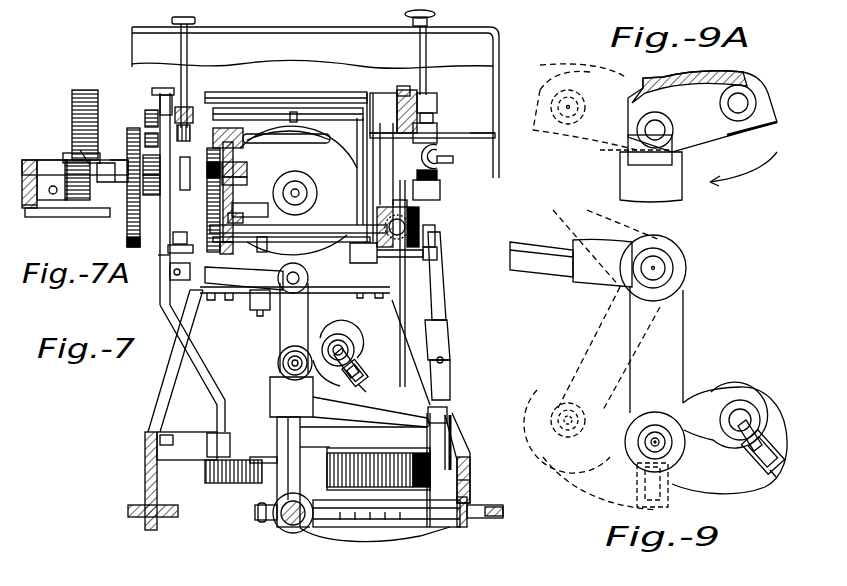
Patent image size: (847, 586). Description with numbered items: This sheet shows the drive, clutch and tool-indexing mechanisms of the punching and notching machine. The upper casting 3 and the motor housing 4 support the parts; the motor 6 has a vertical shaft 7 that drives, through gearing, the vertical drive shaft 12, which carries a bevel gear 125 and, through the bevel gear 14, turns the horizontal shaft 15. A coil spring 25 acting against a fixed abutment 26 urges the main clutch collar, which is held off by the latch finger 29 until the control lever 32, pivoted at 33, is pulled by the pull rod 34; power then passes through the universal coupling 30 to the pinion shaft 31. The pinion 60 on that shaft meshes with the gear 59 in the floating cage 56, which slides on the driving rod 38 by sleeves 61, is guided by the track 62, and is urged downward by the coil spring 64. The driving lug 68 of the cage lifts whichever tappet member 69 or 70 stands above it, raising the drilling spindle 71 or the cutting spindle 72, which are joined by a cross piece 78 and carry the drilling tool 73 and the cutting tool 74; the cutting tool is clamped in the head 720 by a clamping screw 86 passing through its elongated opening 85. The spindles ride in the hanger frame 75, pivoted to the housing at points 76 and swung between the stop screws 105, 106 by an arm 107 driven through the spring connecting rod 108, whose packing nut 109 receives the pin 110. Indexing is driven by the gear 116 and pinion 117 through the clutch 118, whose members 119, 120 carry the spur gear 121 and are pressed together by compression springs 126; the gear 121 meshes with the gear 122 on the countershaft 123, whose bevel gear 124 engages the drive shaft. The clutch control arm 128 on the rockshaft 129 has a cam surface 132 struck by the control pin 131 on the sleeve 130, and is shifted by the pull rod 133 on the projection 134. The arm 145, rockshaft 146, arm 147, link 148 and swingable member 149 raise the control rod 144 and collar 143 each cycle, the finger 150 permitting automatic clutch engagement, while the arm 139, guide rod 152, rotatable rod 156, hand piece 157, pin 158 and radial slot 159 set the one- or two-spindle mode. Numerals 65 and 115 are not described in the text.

In FIG. 7, the upper casting 3 is at (499, 55).
In FIG. 7, the motor housing 4 is at (380, 93).
In FIG. 7, the motor 6 is at (335, 170).
In FIG. 7, the motor shaft 7 is at (297, 190).
In FIG. 7, the drive shaft 12 is at (410, 228).
In FIG. 7, the bevel gear 14 is at (407, 210).
In FIG. 7, the horizontal shaft 15 is at (437, 130).
In FIG. 7, the coil spring 25 is at (437, 175).
In FIG. 7, the fixed abutment 26 is at (440, 190).
In FIG. 7, the latch finger 29 is at (437, 253).
In FIG. 7, the universal coupling 30 is at (445, 290).
In FIG. 7, the pinion shaft 31 is at (452, 403).
In FIG. 7, the control lever 32 is at (330, 108).
In FIG. 7, the lever pivot 33 is at (357, 182).
In FIG. 7, the pull rod 34 is at (293, 112).
In FIG. 7, the driving rod 38 is at (283, 527).
In FIG. 7, the floating cage 56 is at (307, 442).
In FIG. 7, the gear 59 is at (230, 484).
In FIG. 7, the pinion 60 is at (465, 457).
In FIG. 7, the sleeve 61 is at (295, 533).
In FIG. 7, the track 62 is at (470, 527).
In FIG. 7, the coil spring 64 is at (258, 516).
In FIG. 7, the body 65 is at (376, 540).
In FIG. 7, the driving lug 68 is at (270, 390).
In FIG. 7, the tappet member 69 is at (278, 366).
In FIG. 9A, the tappet member 69 is at (635, 147).
In FIG. 9A, the tappet member 70 is at (770, 127).
In FIG. 9A, the drilling spindle 71 is at (675, 145).
In FIG. 9A, the cutting spindle 72 is at (757, 100).
In FIG. 7, the drilling tool 73 is at (332, 340).
In FIG. 9, the drilling tool 73 is at (647, 447).
In FIG. 7, the cutting tool 74 is at (355, 363).
In FIG. 9, the cutting tool 74 is at (747, 470).
In FIG. 7, the hanger frame 75 is at (309, 310).
In FIG. 9A, the hanger frame 75 is at (672, 82).
In FIG. 9, the hanger frame 75 is at (684, 343).
In FIG. 7, the pivot points 76 is at (300, 276).
In FIG. 9, the pivot points 76 is at (665, 266).
In FIG. 7, the cross piece 78 is at (322, 395).
In FIG. 9A, the cross piece 78 is at (713, 133).
In FIG. 9, the cross piece 78 is at (710, 483).
In FIG. 7, the elongated opening 85 is at (368, 368).
In FIG. 9, the clamping screw 86 is at (781, 444).
In FIG. 7, the adjustable stop screw 105 is at (267, 247).
In FIG. 7, the adjustable stop screw 106 is at (258, 312).
In FIG. 7, the arm 107 is at (185, 281).
In FIG. 9, the arm 107 is at (550, 262).
In FIG. 7, the spring connecting rod 108 is at (168, 250).
In FIG. 7, the packing nut 109 is at (192, 238).
In FIG. 7, the pin 110 is at (186, 253).
In FIG. 7, the arc 115 is at (268, 143).
In FIG. 7A, the gear 116 is at (86, 94).
In FIG. 7, the gear 116 is at (200, 125).
In FIG. 7A, the pinion 117 is at (72, 160).
In FIG. 7, the pinion 117 is at (186, 192).
In FIG. 7A, the clutch 118 is at (166, 148).
In FIG. 7A, the driving clutch member 119 is at (112, 185).
In FIG. 7, the driving clutch member 119 is at (242, 200).
In FIG. 7A, the driven clutch member 120 is at (80, 150).
In FIG. 7A, the spur gear 121 is at (148, 118).
In FIG. 7, the spur gear 121 is at (240, 132).
In FIG. 7, the gear 122 is at (233, 250).
In FIG. 7, the countershaft 123 is at (327, 225).
In FIG. 7, the bevel gear 124 is at (393, 250).
In FIG. 7, the bevel gear 125 is at (430, 238).
In FIG. 7A, the compression springs 126 is at (30, 208).
In FIG. 7A, the clutch control arm 128 is at (168, 130).
In FIG. 7, the rockshaft 129 is at (262, 92).
In FIG. 7A, the sleeve 130 is at (65, 200).
In FIG. 7A, the clutch control pin 131 is at (53, 194).
In FIG. 7A, the cam surface 132 is at (170, 185).
In FIG. 7, the pull rod 133 is at (195, 20).
In FIG. 7, the projection 134 is at (185, 122).
In FIG. 7, the arm 139 is at (397, 113).
In FIG. 7, the collar 143 is at (390, 165).
In FIG. 7, the control rod 144 is at (454, 157).
In FIG. 7, the arm 145 is at (437, 102).
In FIG. 7, the rockshaft 146 is at (158, 100).
In FIG. 7, the arm 147 is at (152, 95).
In FIG. 7, the link 148 is at (162, 308).
In FIG. 7, the swingable member 149 is at (222, 437).
In FIG. 7, the finger 150 is at (496, 140).
In FIG. 7, the guide rod 152 is at (490, 133).
In FIG. 7, the rotatable rod 156 is at (427, 52).
In FIG. 7, the hand piece 157 is at (405, 15).
In FIG. 7, the pin 158 is at (410, 93).
In FIG. 7, the radial slot 159 is at (433, 118).
In FIG. 7, the head 720 is at (364, 390).
In FIG. 9, the head 720 is at (772, 468).